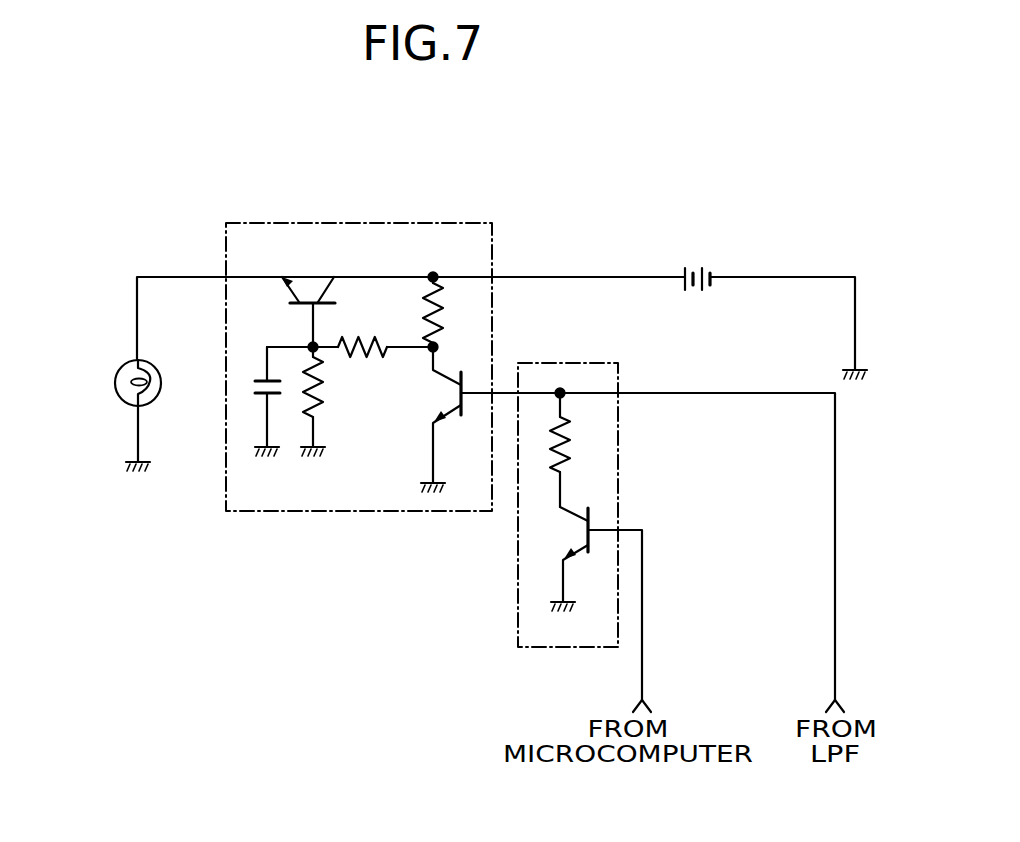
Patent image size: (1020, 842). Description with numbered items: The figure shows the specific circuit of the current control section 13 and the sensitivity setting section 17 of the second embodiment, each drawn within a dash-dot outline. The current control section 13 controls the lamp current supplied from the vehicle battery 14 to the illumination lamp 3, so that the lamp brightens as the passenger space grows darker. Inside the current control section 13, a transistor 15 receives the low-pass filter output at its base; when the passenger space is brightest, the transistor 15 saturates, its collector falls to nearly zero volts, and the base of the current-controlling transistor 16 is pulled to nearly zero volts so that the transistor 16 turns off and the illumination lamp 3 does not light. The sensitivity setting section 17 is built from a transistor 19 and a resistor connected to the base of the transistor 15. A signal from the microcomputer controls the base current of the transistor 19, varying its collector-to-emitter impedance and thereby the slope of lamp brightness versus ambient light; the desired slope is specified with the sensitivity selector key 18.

The illumination lamp 3 is at (113, 382).
The current control section 13 is at (273, 222).
The battery 14 is at (694, 262).
The transistor 15 is at (450, 397).
The current-controlling transistor 16 is at (307, 288).
The sensitivity setting section 17 is at (518, 572).
The sensitivity selector key 18 is at (577, 455).
The transistor 19 is at (583, 531).